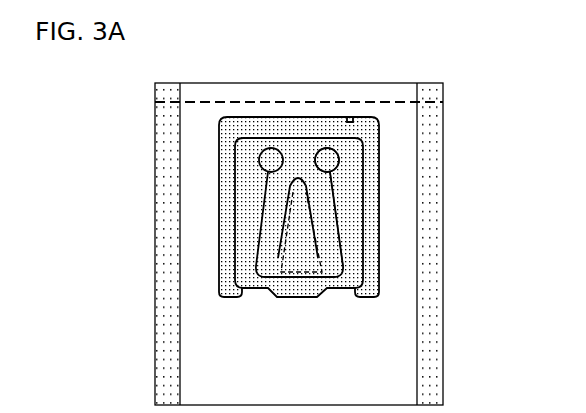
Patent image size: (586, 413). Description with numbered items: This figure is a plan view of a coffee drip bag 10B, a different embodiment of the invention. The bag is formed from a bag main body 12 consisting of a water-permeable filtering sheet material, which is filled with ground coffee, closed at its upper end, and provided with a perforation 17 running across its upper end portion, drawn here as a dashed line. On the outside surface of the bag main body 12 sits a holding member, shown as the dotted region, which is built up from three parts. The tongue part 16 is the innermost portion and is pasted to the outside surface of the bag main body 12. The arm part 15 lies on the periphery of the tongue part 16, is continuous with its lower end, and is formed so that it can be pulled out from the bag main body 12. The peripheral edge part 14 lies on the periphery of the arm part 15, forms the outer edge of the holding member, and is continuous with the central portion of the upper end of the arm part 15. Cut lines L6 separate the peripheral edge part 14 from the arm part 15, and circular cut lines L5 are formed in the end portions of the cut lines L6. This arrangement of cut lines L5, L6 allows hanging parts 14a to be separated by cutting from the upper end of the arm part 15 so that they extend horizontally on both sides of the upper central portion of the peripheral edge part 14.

The coffee drip bag 10B is at (311, 212).
The bag main body 12 is at (228, 351).
The peripheral edge part 14 is at (254, 185).
The hanging part 14a is at (338, 136).
The arm part 15 is at (265, 213).
The tongue part 16 is at (288, 240).
The perforation 17 is at (398, 96).
The circular cut line L5 is at (340, 160).
The cut line L6 is at (342, 212).